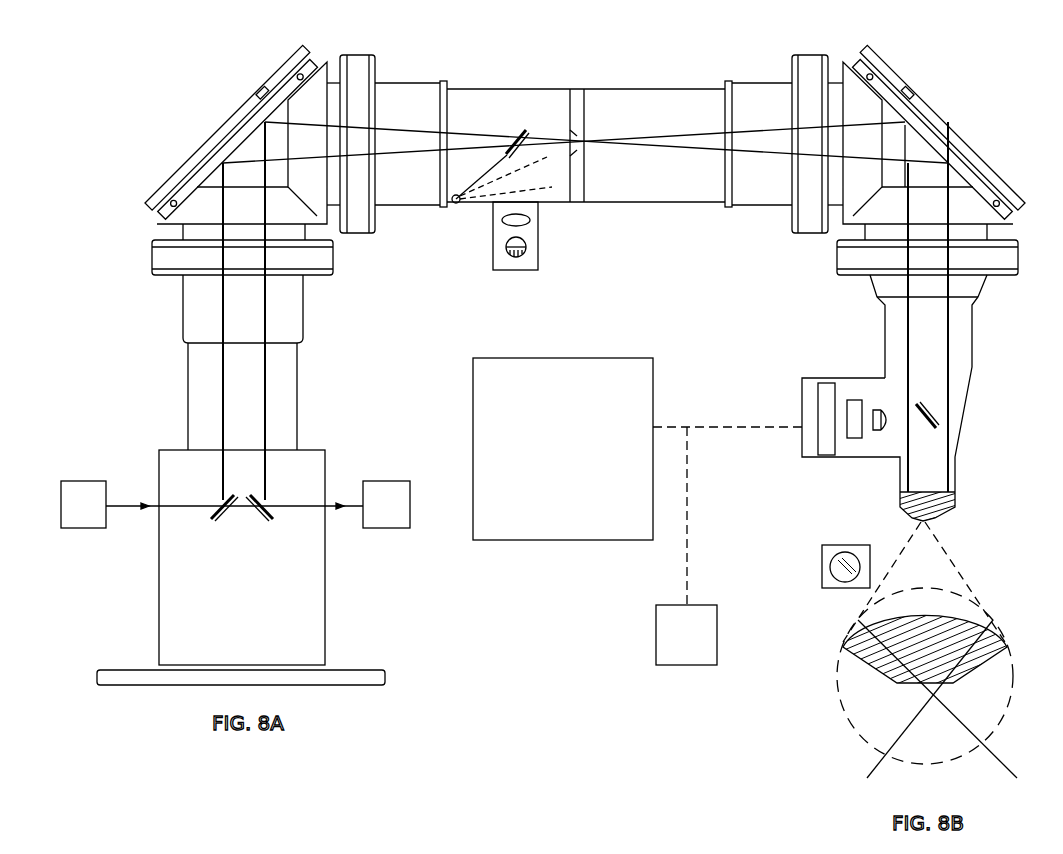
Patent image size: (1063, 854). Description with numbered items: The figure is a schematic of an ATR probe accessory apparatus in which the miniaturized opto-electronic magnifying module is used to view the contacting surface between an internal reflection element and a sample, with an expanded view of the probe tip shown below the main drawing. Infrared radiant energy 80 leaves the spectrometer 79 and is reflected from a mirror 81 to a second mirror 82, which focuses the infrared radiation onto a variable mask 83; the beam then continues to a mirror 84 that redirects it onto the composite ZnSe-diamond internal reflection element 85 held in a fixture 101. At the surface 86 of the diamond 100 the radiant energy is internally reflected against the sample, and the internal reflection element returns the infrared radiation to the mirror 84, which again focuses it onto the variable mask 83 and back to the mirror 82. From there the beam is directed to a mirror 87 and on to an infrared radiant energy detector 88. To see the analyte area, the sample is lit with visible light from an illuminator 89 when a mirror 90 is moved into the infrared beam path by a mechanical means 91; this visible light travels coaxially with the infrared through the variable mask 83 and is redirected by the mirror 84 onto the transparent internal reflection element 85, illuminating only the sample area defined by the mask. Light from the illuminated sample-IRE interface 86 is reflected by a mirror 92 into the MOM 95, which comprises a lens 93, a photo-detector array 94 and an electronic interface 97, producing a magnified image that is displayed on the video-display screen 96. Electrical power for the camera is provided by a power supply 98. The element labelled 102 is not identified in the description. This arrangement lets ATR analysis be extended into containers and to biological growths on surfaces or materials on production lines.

In FIG. 8A, the spectrometer 79 is at (83, 504).
In FIG. 8A, the infrared radiant energy 80 is at (130, 513).
In FIG. 8A, the mirror 81 is at (220, 521).
In FIG. 8A, the mirror 82 is at (237, 140).
In FIG. 8A, the variable mask 83 is at (580, 87).
In FIG. 8A, the mirror 84 is at (933, 138).
In FIG. 8A, the composite ZnSe-diamond internal reflection element 85 is at (940, 491).
In FIG. 8B, the IRE-sample interface 86 is at (920, 711).
In FIG. 8A, the mirror 87 is at (265, 521).
In FIG. 8A, the infrared radiant energy detector 88 is at (386, 504).
In FIG. 8A, the illuminator 89 is at (520, 273).
In FIG. 8A, the mirror 90 is at (518, 130).
In FIG. 8A, the mechanical means 91 is at (454, 203).
In FIG. 8A, the mirror 92 is at (937, 417).
In FIG. 8A, the lens 93 is at (880, 408).
In FIG. 8A, the photo-detector array 94 is at (855, 439).
In FIG. 8A, the MOM (miniaturized opto-electronic magnifying module) 95 is at (808, 376).
In FIG. 8A, the video-display screen 96 is at (637, 481).
In FIG. 8A, the electronic interface 97 is at (827, 456).
In FIG. 8A, the power supply 98 is at (686, 635).
In FIG. 8B, the diamond 100 is at (949, 711).
In FIG. 8A, the fixture 101 is at (960, 498).
In FIG. 8A, the sensor 102 is at (820, 570).